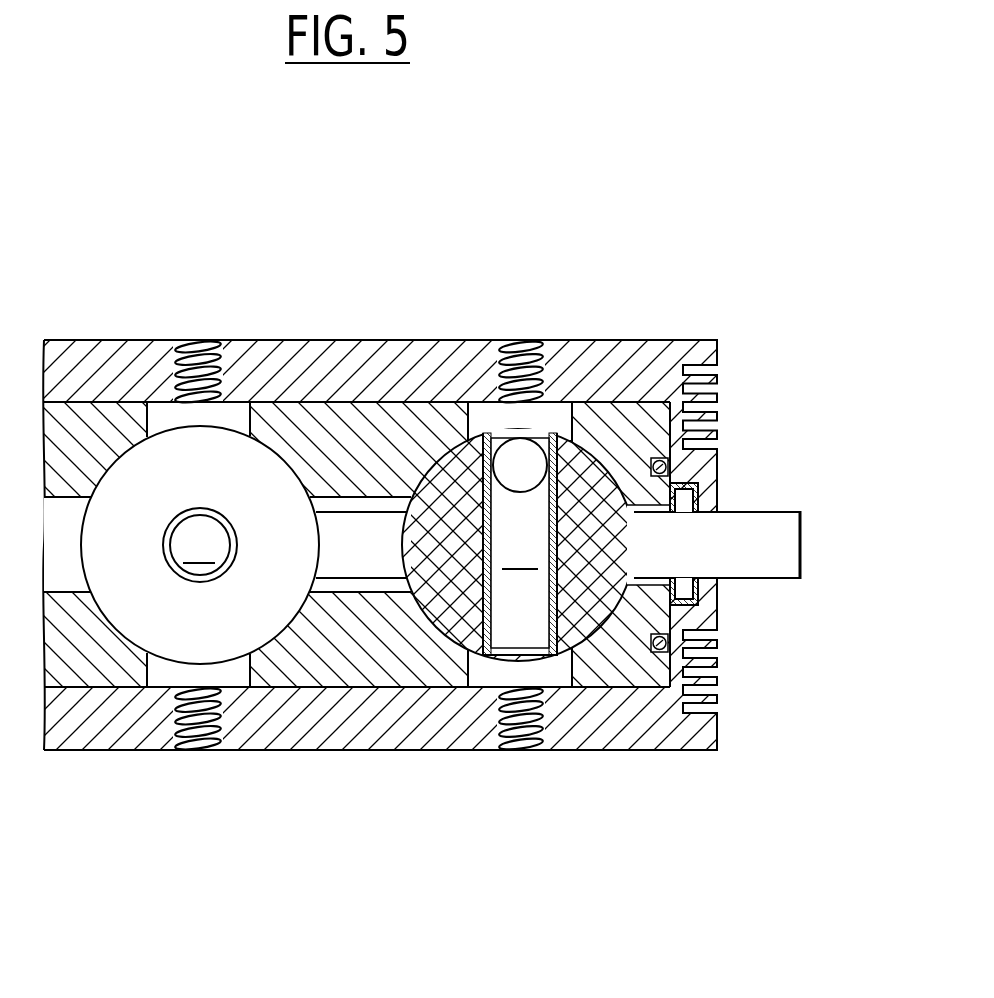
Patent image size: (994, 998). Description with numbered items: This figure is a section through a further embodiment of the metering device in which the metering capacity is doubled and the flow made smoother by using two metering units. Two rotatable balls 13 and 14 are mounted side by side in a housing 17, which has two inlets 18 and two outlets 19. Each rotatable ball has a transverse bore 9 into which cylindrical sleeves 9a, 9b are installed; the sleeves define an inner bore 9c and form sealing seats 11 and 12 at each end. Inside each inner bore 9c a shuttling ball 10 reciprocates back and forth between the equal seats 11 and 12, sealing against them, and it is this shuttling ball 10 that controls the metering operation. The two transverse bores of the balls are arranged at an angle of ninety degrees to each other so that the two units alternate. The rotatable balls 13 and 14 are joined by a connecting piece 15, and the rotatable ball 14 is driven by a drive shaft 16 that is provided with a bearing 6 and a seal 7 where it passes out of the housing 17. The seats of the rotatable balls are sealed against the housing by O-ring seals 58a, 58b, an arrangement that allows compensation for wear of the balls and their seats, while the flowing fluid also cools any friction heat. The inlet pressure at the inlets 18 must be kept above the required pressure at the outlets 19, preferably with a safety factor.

The bearing 6 is at (722, 512).
The seal 7 is at (698, 588).
The transverse bore 9 is at (478, 573).
The cylindrical sleeve 9a is at (190, 582).
The cylindrical sleeve 9b is at (574, 455).
The inner bore 9c is at (354, 545).
The shuttling ball 10 is at (510, 468).
The sealing seat 11 is at (543, 433).
The sealing seat 12 is at (543, 652).
The rotatable ball 13 is at (262, 590).
The rotatable ball 14 is at (569, 496).
The connecting piece 15 is at (372, 565).
The drive shaft 16 is at (783, 542).
The housing 17 is at (298, 360).
The inlet 18 is at (196, 345).
The outlet 19 is at (205, 740).
The O-ring seal 58a is at (670, 458).
The O-ring seal 58b is at (670, 647).